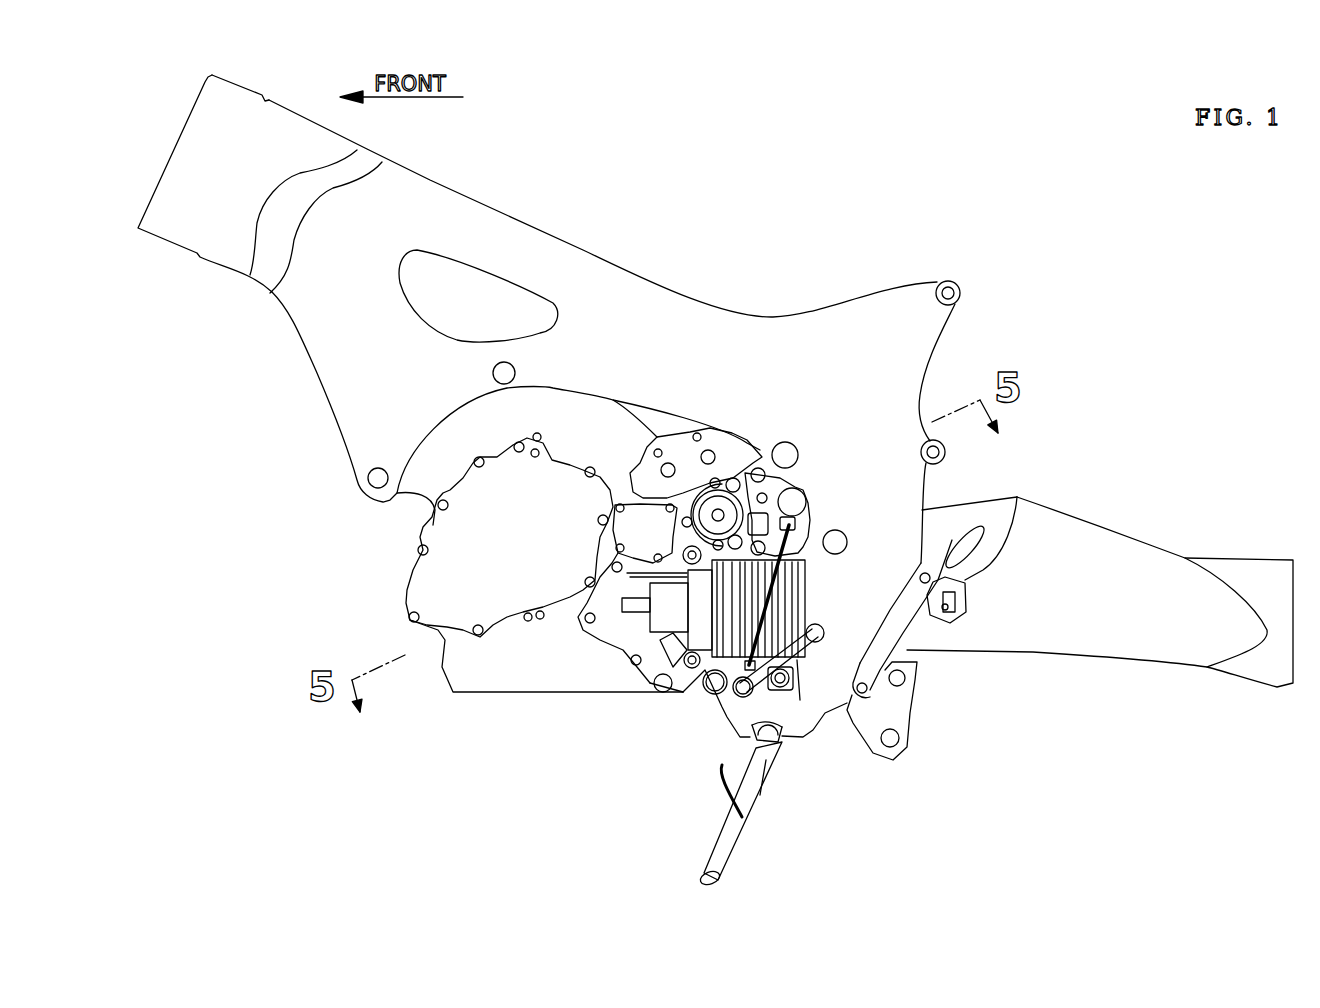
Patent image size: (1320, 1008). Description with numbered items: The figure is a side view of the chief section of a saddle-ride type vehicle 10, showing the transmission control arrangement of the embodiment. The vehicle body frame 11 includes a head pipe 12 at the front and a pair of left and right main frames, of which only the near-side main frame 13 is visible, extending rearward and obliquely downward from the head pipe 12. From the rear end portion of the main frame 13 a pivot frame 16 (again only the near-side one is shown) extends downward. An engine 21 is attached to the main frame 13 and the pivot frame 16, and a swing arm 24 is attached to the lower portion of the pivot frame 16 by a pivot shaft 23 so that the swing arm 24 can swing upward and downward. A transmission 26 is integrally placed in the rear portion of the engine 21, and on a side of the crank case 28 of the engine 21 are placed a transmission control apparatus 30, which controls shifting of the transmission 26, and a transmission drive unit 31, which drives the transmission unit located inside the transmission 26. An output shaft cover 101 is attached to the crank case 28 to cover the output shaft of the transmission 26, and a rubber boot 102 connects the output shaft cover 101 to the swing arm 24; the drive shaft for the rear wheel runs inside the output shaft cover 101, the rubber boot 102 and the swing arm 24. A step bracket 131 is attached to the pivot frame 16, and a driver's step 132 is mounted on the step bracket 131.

The saddle-ride type vehicle 10 is at (998, 223).
The vehicle body frame 11 is at (583, 250).
The head pipe 12 is at (180, 158).
The main frame 13 is at (453, 217).
The pivot frame 16 is at (900, 635).
The engine 21 is at (400, 590).
The pivot shaft 23 is at (838, 538).
The swing arm 24 is at (1107, 543).
The transmission 26 is at (607, 640).
The crank case 28 is at (495, 683).
The transmission control apparatus 30 is at (799, 477).
The transmission drive unit 31 is at (730, 470).
The output shaft cover 101 is at (678, 630).
The rubber boot 102 is at (800, 597).
The step bracket 131 is at (872, 598).
The driver's step 132 is at (957, 573).